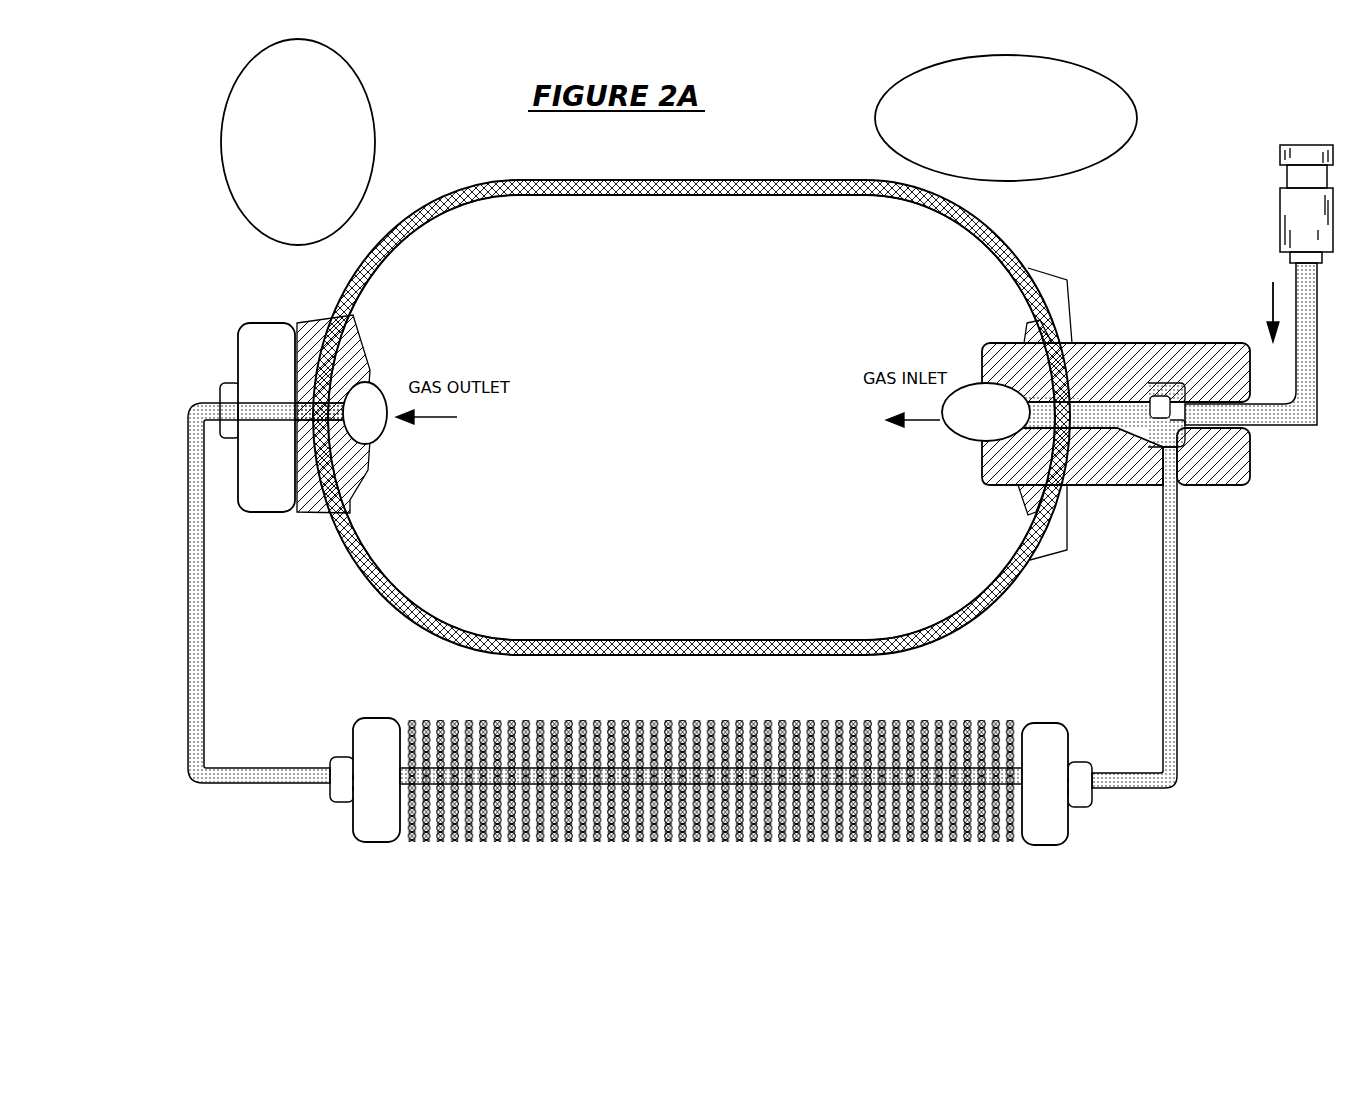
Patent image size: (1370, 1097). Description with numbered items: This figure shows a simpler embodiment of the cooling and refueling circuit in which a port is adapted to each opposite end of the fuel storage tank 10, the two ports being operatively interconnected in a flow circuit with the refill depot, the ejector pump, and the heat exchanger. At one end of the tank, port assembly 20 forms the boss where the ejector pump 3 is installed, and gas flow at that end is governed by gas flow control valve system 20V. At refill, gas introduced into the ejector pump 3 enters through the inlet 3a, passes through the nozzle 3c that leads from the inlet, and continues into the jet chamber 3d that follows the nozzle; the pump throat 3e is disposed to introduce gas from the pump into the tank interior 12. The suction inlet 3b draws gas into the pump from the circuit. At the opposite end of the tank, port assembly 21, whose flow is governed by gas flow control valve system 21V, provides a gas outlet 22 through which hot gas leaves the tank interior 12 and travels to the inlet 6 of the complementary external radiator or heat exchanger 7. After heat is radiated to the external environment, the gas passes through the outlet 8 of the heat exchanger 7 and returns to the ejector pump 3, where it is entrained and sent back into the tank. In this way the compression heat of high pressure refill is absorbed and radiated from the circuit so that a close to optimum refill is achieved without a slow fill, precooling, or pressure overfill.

The fuel storage tank 10 is at (727, 181).
The tank interior 12 is at (579, 266).
The port assembly (boss) 20 is at (1057, 273).
The port assembly (boss) 21 is at (252, 323).
The gas outlet 22 is at (385, 430).
The ejector pump 3 is at (1212, 373).
The inlet 3a is at (1250, 423).
The suction inlet 3b is at (1172, 475).
The nozzle 3c is at (1143, 412).
The jet chamber 3d is at (1102, 408).
The pump throat 3e is at (1065, 413).
The inlet of heat exchanger 6 is at (318, 785).
The heat exchanger 7 is at (430, 838).
The outlet of heat exchanger 8 is at (1115, 780).
The gas flow control valve system 21V is at (343, 290).
The gas flow control valve system 20V is at (995, 343).